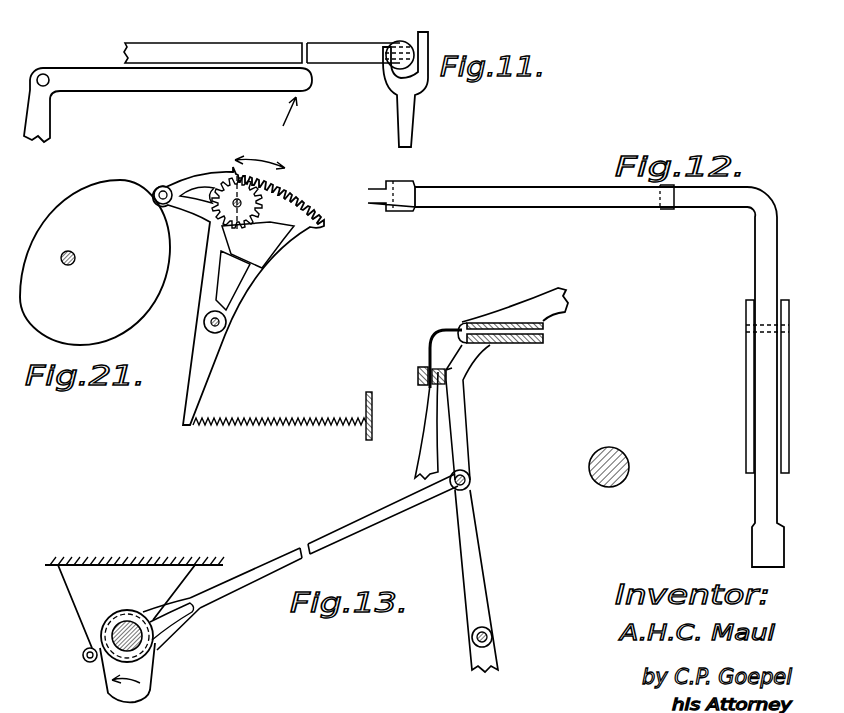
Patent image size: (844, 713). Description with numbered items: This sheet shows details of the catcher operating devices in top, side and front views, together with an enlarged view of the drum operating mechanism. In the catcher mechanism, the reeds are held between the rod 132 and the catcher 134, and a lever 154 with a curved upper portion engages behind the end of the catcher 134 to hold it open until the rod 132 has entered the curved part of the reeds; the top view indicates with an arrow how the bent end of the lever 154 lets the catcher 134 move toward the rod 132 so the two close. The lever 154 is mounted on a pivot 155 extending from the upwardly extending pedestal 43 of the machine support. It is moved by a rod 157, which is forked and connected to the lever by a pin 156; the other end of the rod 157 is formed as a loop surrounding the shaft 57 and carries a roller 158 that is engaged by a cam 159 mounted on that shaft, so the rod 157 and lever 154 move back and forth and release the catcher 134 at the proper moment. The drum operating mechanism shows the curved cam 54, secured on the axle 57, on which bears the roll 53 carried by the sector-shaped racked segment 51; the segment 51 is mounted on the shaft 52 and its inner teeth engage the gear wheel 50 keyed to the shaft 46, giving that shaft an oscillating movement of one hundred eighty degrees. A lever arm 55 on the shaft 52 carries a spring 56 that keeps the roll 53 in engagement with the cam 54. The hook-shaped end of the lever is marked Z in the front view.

In FIG. 11, the rod 132 is at (184, 50).
In FIG. 11, the catcher 134 is at (196, 84).
In FIG. 12, the catcher 134 is at (575, 193).
In FIG. 13, the catcher 134 is at (417, 372).
In FIG. 13, the bearing 43 is at (470, 656).
In FIG. 21, the shaft 46 is at (231, 210).
In FIG. 21, the gear wheel 50 is at (262, 195).
In FIG. 21, the segment 51 is at (308, 186).
In FIG. 21, the shaft 52 is at (228, 322).
In FIG. 21, the roll 53 is at (164, 184).
In FIG. 21, the cam 54 is at (106, 190).
In FIG. 21, the lever arm 55 is at (220, 363).
In FIG. 21, the spring 56 is at (354, 416).
In FIG. 21, the axle 57 is at (64, 252).
In FIG. 13, the axle 57 is at (125, 621).
In FIG. 12, the lever 154 is at (765, 239).
In FIG. 13, the lever 154 is at (458, 446).
In FIG. 13, the pivot 155 is at (490, 629).
In FIG. 12, the pin 156 is at (751, 330).
In FIG. 13, the pin 156 is at (472, 477).
In FIG. 12, the rod 157 is at (748, 404).
In FIG. 13, the rod 157 is at (320, 536).
In FIG. 13, the roller 158 is at (89, 663).
In FIG. 13, the cam 159 is at (145, 690).
In FIG. 13, the hook Z is at (441, 332).